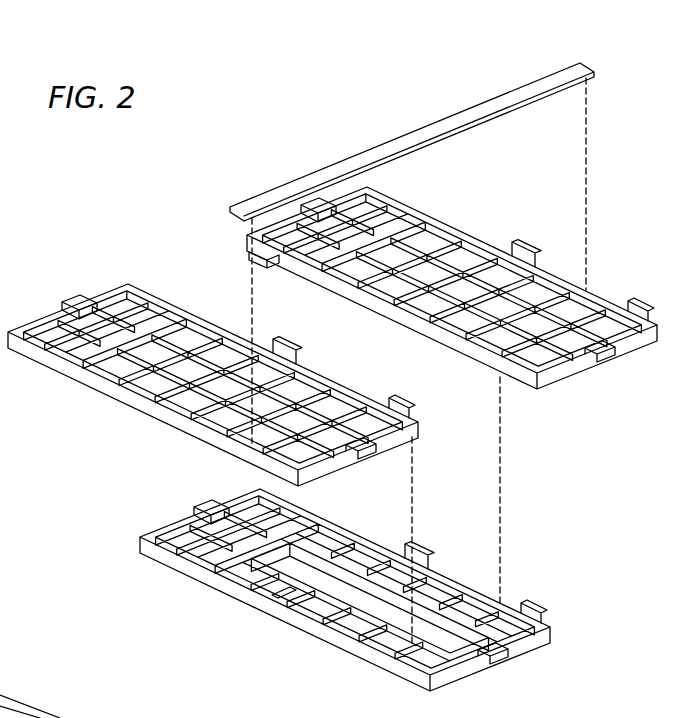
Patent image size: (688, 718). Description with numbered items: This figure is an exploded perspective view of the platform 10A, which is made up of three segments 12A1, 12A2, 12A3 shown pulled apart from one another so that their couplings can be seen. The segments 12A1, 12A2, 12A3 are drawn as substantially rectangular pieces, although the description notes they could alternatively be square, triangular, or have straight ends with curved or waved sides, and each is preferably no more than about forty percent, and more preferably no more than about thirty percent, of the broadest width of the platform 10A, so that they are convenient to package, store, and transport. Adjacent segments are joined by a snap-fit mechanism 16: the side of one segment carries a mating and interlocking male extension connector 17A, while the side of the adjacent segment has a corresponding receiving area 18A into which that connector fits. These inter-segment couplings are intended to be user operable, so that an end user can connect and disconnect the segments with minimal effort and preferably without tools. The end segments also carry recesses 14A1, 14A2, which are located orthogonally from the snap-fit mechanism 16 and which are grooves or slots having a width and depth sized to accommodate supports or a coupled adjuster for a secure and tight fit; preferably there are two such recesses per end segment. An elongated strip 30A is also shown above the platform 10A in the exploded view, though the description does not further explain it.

The platform 10A is at (118, 212).
The first segment 12A1 is at (123, 410).
The second segment 12A2 is at (413, 682).
The third segment 12A3 is at (552, 388).
The recess 14A1 is at (72, 313).
The recess 14A2 is at (590, 355).
The snap-fit mechanism 16 is at (412, 483).
The male extension connector 17A is at (268, 257).
The receiving area 18A is at (283, 602).
The cover strip 30A is at (423, 132).